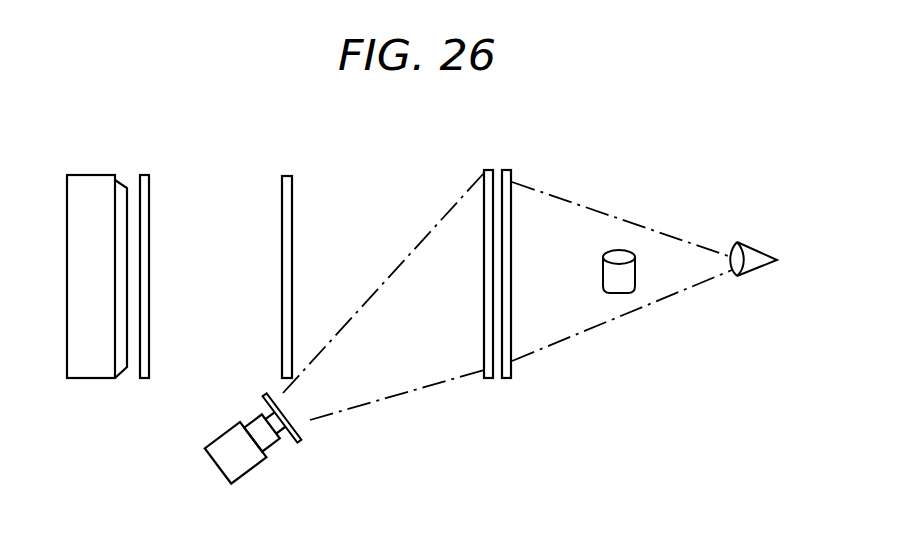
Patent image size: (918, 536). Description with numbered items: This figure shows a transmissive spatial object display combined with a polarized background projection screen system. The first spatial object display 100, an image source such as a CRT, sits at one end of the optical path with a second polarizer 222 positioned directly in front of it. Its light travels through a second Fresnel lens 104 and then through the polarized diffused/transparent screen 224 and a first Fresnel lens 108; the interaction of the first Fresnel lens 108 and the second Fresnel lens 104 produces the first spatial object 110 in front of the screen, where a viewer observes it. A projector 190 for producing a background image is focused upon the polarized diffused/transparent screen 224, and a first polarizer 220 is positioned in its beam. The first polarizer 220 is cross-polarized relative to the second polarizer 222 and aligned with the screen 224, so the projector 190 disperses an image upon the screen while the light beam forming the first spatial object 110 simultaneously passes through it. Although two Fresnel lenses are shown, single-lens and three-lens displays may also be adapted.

The first spatial object display 100 is at (93, 175).
The second polarizer 222 is at (150, 203).
The second Fresnel lens 104 is at (292, 176).
The polarized diffused/transparent screen 224 is at (484, 170).
The first Fresnel lens 108 is at (505, 170).
The first spatial object 110 is at (600, 252).
The projector 190 is at (223, 432).
The first polarizer 220 is at (290, 410).